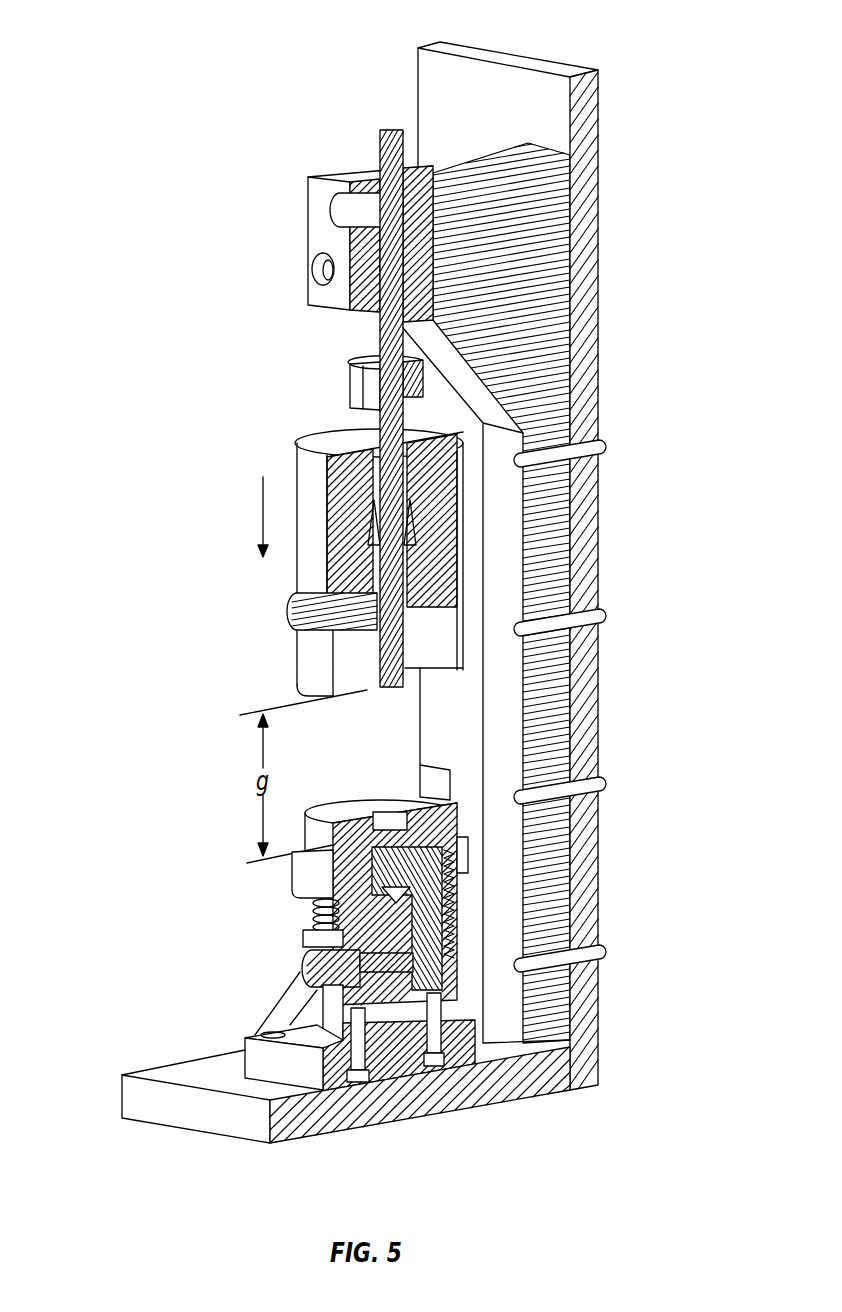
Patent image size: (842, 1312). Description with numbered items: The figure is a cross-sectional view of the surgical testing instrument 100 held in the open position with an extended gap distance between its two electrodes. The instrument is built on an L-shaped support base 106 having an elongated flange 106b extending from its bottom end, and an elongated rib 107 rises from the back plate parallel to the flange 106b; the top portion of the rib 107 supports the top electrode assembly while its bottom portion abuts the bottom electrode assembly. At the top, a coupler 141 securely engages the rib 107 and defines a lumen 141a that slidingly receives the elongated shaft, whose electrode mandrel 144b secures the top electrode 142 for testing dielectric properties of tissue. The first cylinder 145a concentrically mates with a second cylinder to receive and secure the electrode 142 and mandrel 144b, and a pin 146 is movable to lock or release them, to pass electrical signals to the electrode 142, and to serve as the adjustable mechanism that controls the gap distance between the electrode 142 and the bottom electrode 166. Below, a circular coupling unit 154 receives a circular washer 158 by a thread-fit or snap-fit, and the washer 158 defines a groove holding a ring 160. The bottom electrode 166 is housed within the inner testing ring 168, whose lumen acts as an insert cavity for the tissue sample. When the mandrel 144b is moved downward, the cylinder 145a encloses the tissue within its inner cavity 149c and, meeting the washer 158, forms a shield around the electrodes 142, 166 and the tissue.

The surgical testing instrument 100 is at (163, 371).
The support base 106 is at (530, 44).
The elongated flange 106b is at (430, 1100).
The elongated rib 107 is at (548, 290).
The coupler 141 is at (333, 174).
The lumen 141a is at (350, 305).
The electrode 142 is at (395, 690).
The electrode mandrel 144b is at (375, 423).
The first cylinder 145a is at (305, 675).
The pin 146 is at (288, 615).
The inner cavity 149c is at (344, 675).
The circular coupling unit 154 is at (325, 1015).
The circular washer 158 is at (312, 920).
The ring 160 is at (310, 890).
The electrode 166 is at (385, 805).
The inner testing ring 168 is at (392, 810).